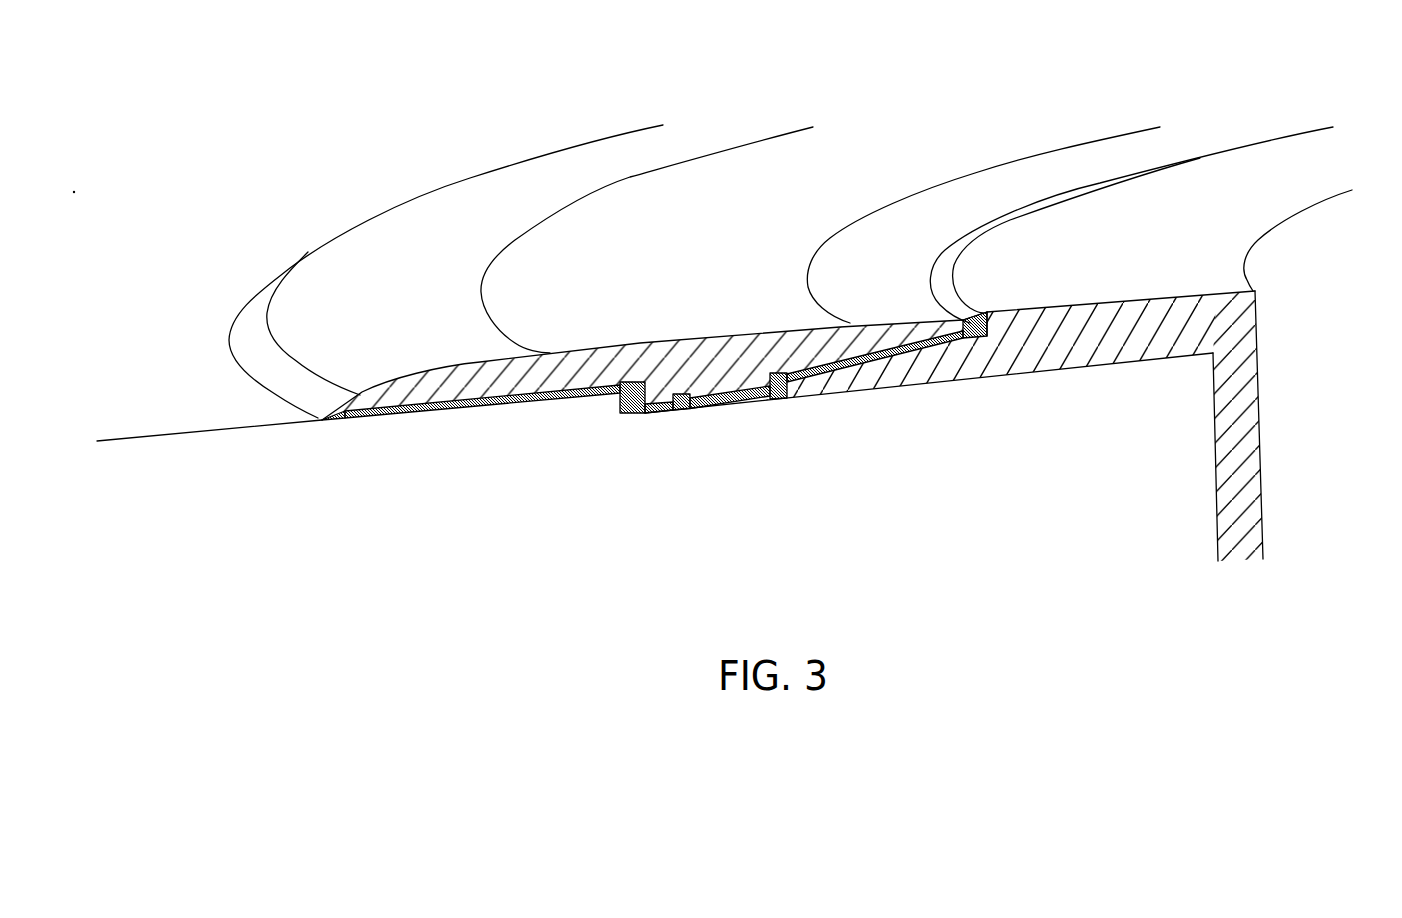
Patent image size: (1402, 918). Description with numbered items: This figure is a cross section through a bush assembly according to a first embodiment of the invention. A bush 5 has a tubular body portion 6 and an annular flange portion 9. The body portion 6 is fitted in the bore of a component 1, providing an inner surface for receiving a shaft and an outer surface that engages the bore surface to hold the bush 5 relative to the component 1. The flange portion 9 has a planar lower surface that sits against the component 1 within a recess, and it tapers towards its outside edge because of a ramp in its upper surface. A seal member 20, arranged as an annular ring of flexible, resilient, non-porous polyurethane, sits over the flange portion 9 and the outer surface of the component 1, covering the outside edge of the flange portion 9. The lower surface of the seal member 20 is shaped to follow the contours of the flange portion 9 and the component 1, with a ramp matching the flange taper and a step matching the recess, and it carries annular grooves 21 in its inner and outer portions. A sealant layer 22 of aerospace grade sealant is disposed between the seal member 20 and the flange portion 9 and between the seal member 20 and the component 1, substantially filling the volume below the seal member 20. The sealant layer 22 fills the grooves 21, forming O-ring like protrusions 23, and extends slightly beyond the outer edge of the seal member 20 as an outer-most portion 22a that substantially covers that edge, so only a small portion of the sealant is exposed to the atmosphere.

The component 1 is at (988, 498).
The bush 5 is at (1260, 167).
The tubular body portion 6 is at (1250, 510).
The annular flange portion 9 is at (1157, 342).
The seal member 20 is at (827, 153).
The grooves 21 is at (780, 396).
The sealant layer 22 is at (623, 413).
The outer-most portion of the sealant layer 22a is at (347, 416).
The O-ring like protrusions 23 is at (672, 411).